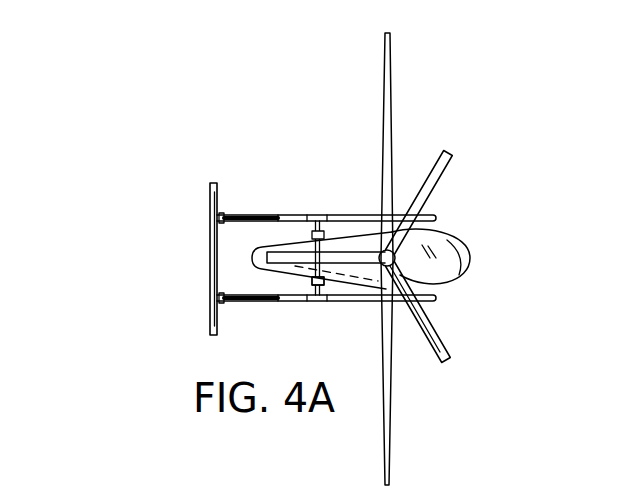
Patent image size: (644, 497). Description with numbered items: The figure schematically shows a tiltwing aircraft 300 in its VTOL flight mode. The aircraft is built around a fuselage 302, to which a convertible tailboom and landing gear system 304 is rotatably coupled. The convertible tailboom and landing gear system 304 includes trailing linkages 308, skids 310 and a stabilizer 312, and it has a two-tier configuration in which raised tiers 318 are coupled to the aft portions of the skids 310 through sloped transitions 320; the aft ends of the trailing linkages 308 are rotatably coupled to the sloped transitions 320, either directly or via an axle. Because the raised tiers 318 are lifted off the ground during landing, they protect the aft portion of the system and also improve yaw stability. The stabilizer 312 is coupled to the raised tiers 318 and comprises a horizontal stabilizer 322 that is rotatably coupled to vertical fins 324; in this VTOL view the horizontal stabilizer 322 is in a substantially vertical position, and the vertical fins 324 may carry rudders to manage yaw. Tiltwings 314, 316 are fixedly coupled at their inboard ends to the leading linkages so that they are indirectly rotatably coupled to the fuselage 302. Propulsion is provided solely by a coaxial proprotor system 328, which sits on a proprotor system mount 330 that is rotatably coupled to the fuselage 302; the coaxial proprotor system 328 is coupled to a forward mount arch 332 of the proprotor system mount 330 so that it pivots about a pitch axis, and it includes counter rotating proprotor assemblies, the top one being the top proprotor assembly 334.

The tiltwing aircraft 300 is at (269, 115).
The fuselage 302 is at (470, 260).
The convertible tailboom and landing gear system 304 is at (210, 233).
The trailing linkages 308 is at (312, 235).
The skids 310 is at (438, 219).
The stabilizer 312 is at (210, 272).
The tiltwing 314 is at (393, 58).
The tiltwing 316 is at (391, 455).
The raised tiers 318 is at (282, 302).
The sloped transitions 320 is at (320, 302).
The horizontal stabilizer 322 is at (210, 320).
The vertical fins 324 is at (258, 213).
The coaxial proprotor system 328 is at (425, 153).
The proprotor system mount 330 is at (437, 281).
The forward mount arch 332 is at (418, 311).
The top proprotor assembly 334 is at (383, 253).